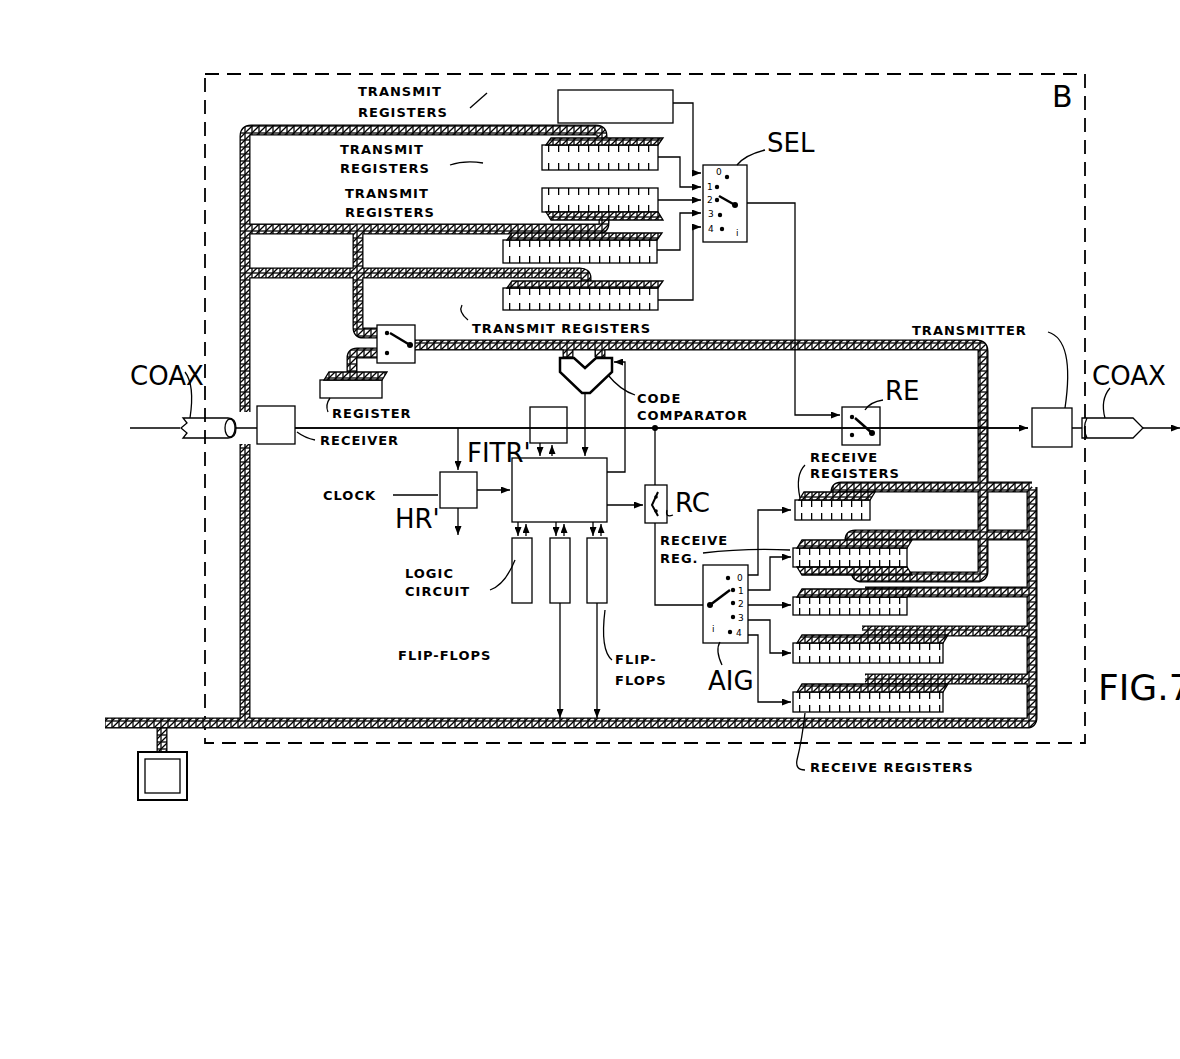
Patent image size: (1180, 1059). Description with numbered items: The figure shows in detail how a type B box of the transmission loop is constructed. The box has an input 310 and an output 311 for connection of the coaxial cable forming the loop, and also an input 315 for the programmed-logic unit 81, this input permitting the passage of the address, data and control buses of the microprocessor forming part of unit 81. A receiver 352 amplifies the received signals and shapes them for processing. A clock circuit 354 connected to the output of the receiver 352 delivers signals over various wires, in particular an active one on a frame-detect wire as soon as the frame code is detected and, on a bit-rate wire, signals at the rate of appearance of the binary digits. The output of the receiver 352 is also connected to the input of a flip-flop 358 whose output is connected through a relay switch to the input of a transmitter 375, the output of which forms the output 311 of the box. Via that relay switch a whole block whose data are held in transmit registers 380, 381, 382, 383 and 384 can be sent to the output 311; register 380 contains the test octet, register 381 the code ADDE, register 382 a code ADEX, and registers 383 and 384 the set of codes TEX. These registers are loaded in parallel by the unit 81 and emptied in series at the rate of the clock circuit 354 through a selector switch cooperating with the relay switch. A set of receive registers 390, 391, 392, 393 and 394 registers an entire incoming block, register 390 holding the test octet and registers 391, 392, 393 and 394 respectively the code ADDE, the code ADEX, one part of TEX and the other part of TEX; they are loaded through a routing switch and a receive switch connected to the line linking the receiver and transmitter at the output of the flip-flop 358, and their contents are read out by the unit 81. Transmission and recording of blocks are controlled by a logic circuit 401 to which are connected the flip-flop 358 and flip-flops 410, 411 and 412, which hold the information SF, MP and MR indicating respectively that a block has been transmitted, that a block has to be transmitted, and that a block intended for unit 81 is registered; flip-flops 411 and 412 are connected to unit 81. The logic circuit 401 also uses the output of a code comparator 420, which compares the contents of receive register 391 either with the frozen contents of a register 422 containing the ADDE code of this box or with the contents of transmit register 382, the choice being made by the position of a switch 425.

The programmed-logic unit 81 is at (187, 778).
The input 310 is at (200, 438).
The output 311 is at (1110, 438).
The input 315 is at (207, 718).
The receiver 352 is at (268, 444).
The clock circuit 354 is at (440, 482).
The flip-flop 358 is at (548, 405).
The transmitter 375 is at (1045, 408).
The register 380 is at (558, 105).
The register 381 is at (542, 158).
The register 382 is at (542, 200).
The register 383 is at (503, 250).
The register 384 is at (503, 300).
The register 390 is at (790, 498).
The register 391 is at (907, 557).
The register 392 is at (907, 606).
The register 393 is at (943, 653).
The register 394 is at (943, 702).
The logic circuit 401 is at (520, 512).
The flip-flop 410 is at (525, 600).
The flip-flop 411 is at (568, 605).
The flip-flop 412 is at (607, 605).
The code comparator 420 is at (626, 360).
The register 422 is at (383, 388).
The switch 425 is at (412, 315).